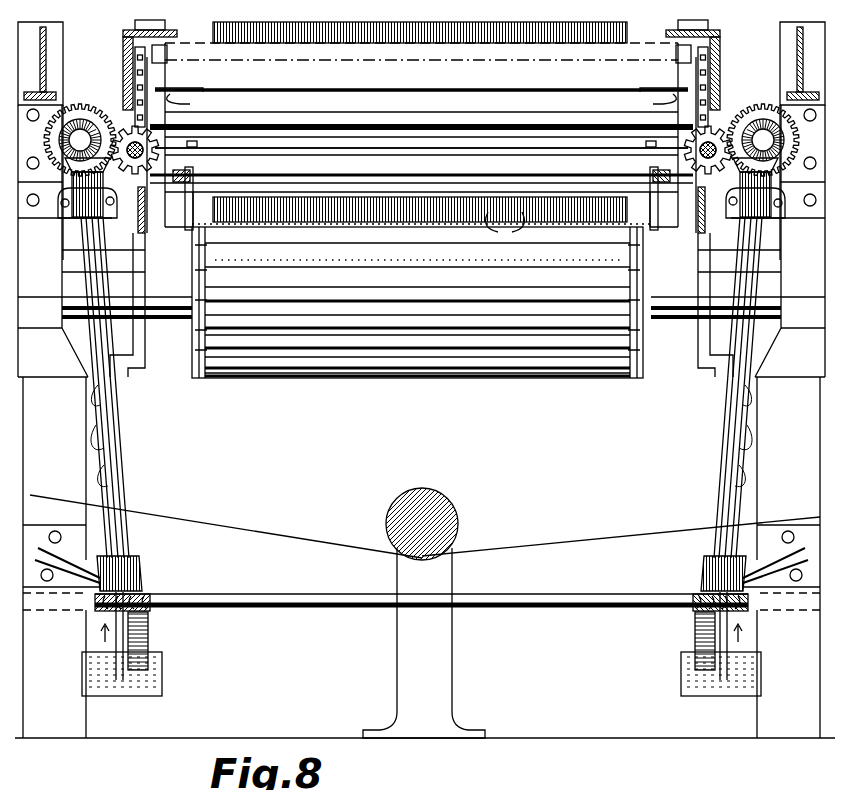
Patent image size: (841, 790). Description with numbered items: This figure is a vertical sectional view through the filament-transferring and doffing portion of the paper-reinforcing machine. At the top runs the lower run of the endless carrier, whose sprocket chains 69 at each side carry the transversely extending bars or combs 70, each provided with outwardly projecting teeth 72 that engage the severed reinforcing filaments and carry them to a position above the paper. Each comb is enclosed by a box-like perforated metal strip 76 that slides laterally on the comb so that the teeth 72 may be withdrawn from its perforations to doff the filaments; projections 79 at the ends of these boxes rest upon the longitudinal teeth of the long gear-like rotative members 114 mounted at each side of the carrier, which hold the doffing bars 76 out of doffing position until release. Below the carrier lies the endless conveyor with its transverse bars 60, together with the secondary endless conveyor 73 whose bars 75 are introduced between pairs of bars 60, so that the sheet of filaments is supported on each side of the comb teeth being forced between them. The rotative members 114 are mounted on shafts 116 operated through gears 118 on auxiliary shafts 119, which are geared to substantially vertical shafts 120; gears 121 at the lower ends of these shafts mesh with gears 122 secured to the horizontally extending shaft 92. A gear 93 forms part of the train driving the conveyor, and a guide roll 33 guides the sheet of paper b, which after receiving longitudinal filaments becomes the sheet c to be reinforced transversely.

The guide roll 33 is at (455, 508).
The bars 60 is at (417, 366).
The sprocket chains 69 is at (130, 44).
The bars or combs 70 is at (538, 50).
The teeth 72 is at (421, 228).
The secondary endless conveyor 73 is at (204, 355).
The bars 75 is at (538, 291).
The metal strip (doffing bar) 76 is at (480, 40).
The projections 79 is at (173, 147).
The horizontally extending shaft 92 is at (538, 592).
The gear 93 is at (135, 103).
The rotative members 114 is at (142, 130).
The shafts 116 is at (700, 155).
The gears 118 is at (78, 105).
The auxiliary shafts 119 is at (75, 147).
The substantially vertical shafts 120 is at (106, 403).
The gears 121 is at (150, 594).
The gears 122 is at (148, 626).
The sheet of paper b is at (285, 541).
The reinforced sheet c is at (170, 298).